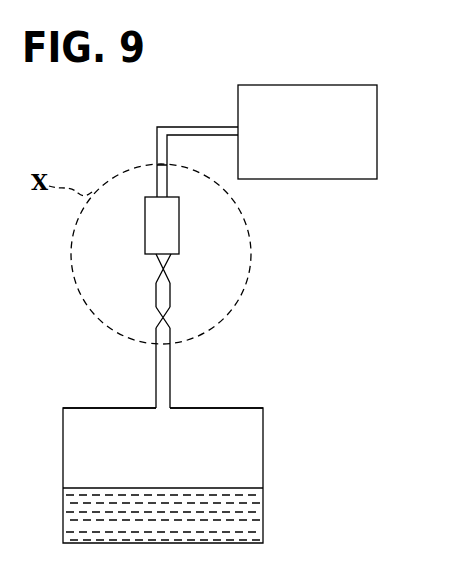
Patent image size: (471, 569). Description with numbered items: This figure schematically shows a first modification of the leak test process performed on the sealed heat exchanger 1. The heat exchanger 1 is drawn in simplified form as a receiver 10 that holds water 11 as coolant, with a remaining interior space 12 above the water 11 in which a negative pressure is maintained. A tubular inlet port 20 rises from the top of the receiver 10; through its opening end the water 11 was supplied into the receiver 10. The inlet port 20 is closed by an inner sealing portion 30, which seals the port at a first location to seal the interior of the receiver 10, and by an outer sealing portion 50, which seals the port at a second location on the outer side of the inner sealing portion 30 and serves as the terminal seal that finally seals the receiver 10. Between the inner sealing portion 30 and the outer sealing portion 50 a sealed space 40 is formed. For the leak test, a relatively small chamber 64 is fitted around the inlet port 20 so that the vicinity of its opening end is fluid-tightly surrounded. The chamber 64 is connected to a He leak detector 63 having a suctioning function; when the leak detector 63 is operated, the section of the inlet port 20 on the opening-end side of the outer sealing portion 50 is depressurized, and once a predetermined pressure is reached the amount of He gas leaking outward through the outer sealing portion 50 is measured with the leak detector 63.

The heat exchanger 1 is at (272, 360).
The receiver 10 is at (263, 468).
The water 11 is at (252, 518).
The remaining interior space 12 is at (250, 435).
The tubular inlet port 20 is at (178, 375).
The inner sealing portion 30 is at (153, 315).
The sealed space 40 is at (163, 295).
The outer sealing portion 50 is at (153, 273).
The He leak detector 63 is at (355, 135).
The chamber 64 is at (165, 230).